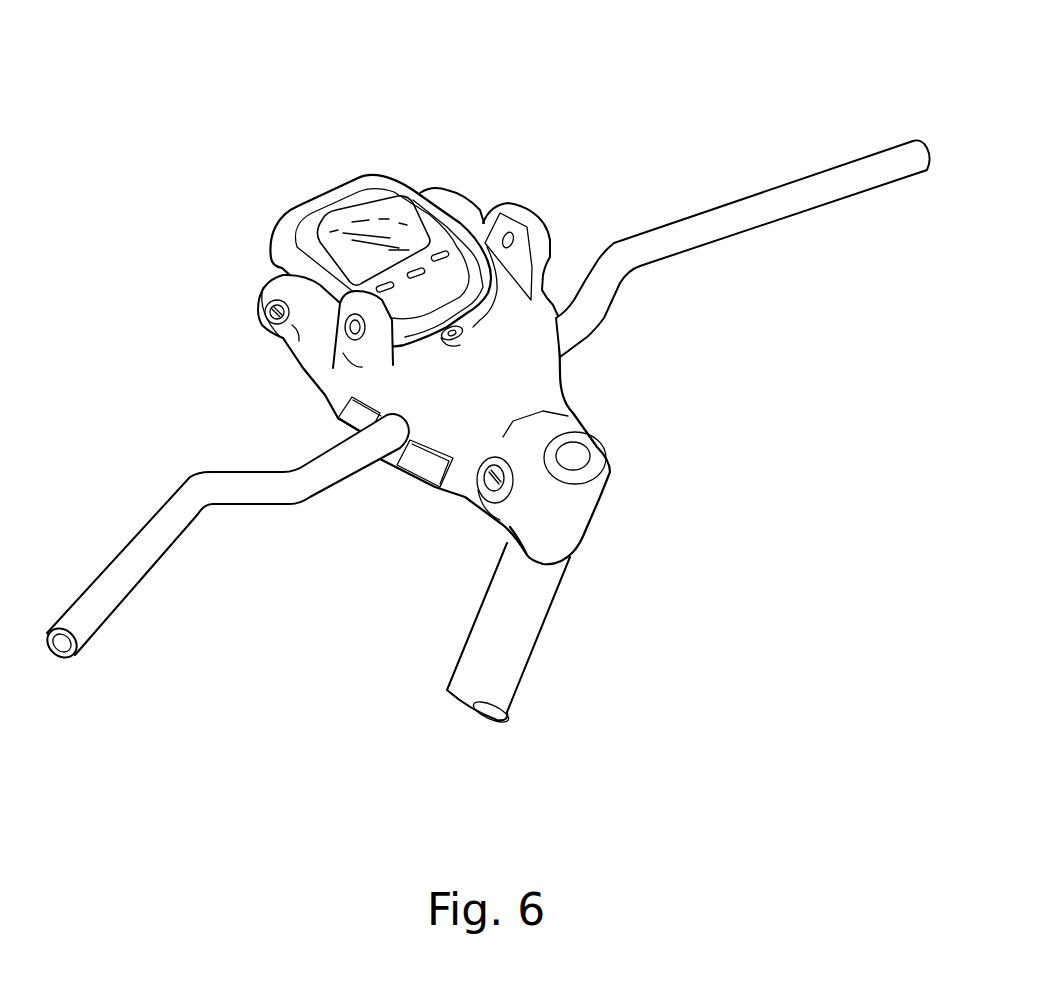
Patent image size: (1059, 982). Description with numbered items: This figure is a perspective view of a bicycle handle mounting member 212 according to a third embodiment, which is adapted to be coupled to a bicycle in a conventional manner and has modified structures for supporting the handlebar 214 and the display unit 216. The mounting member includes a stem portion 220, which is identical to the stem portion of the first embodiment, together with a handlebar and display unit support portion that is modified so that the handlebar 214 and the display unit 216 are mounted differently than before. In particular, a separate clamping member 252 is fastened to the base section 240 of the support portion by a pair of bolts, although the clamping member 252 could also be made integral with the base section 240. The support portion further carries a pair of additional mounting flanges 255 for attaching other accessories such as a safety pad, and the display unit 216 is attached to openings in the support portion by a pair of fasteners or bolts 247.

The bicycle handle mounting member 212 is at (688, 126).
The handlebar 214 is at (771, 180).
The display unit 216 is at (328, 178).
The stem portion 220 is at (610, 498).
The base section 240 is at (535, 378).
The bolts 247 is at (275, 313).
The clamping member 252 is at (414, 464).
The mounting flanges 255 is at (537, 215).